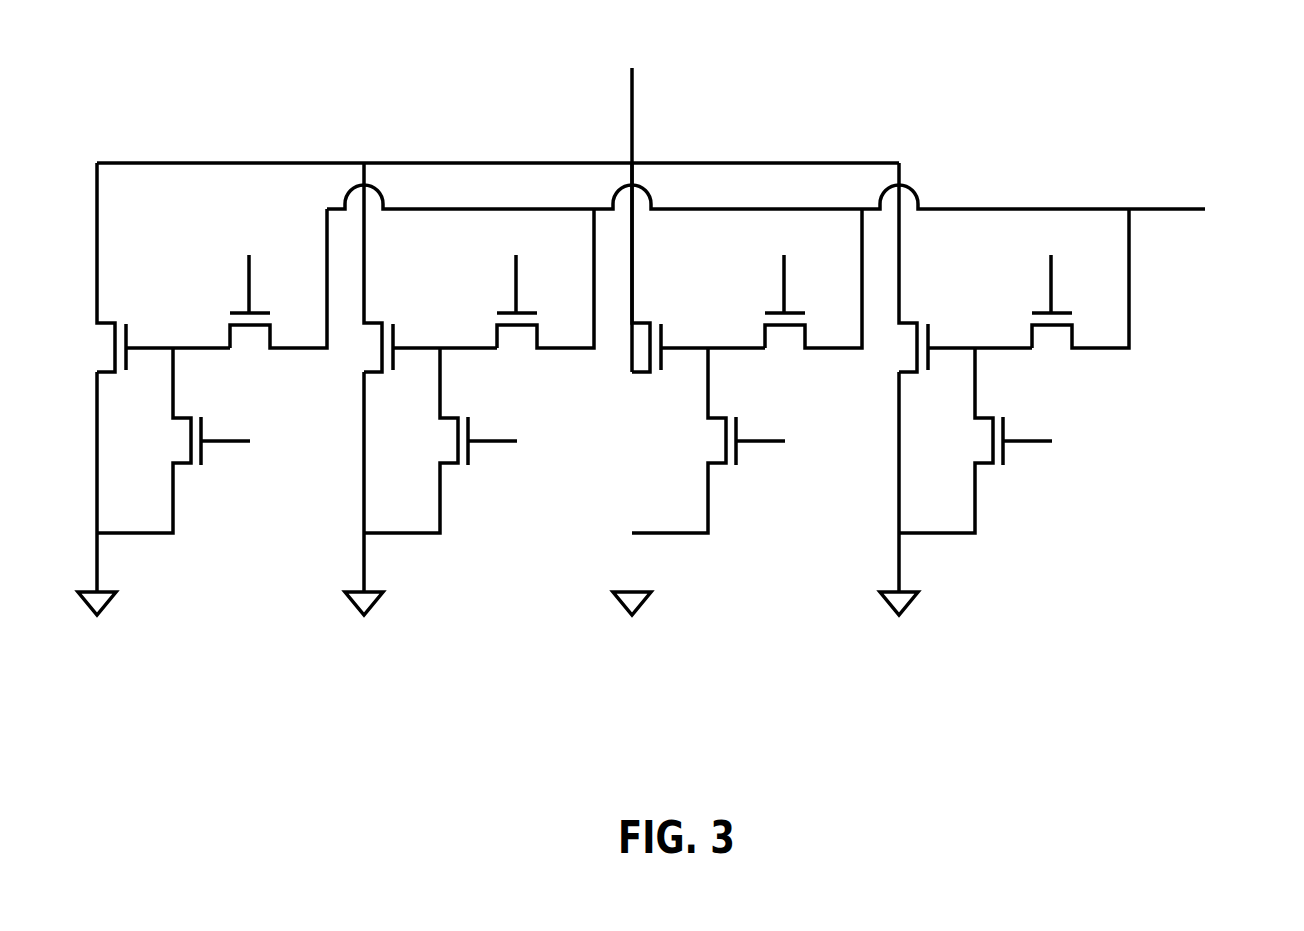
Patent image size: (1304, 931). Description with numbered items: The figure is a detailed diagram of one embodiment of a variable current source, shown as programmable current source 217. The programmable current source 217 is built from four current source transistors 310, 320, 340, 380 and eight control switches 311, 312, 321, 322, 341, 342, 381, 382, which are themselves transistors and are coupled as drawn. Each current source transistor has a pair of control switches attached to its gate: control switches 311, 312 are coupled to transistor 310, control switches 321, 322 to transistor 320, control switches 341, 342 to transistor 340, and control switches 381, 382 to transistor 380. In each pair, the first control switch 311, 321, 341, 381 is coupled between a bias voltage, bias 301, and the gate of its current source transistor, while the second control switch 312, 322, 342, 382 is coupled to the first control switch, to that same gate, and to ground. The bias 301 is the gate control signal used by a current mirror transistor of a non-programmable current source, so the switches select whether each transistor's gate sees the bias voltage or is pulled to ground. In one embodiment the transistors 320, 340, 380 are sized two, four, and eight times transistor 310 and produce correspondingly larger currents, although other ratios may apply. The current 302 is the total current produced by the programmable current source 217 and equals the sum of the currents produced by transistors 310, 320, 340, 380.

The programmable current source 217 is at (700, 738).
The bias voltage 301 is at (793, 204).
The current 302 is at (633, 203).
The current source transistor 310 is at (928, 326).
The control switch 311 is at (1072, 313).
The control switch 312 is at (1003, 466).
The current source transistor 320 is at (661, 327).
The control switch 321 is at (805, 313).
The control switch 322 is at (737, 466).
The current source transistor 340 is at (393, 327).
The control switch 341 is at (537, 313).
The control switch 342 is at (468, 466).
The current source transistor 380 is at (126, 326).
The control switch 381 is at (270, 313).
The control switch 382 is at (201, 466).